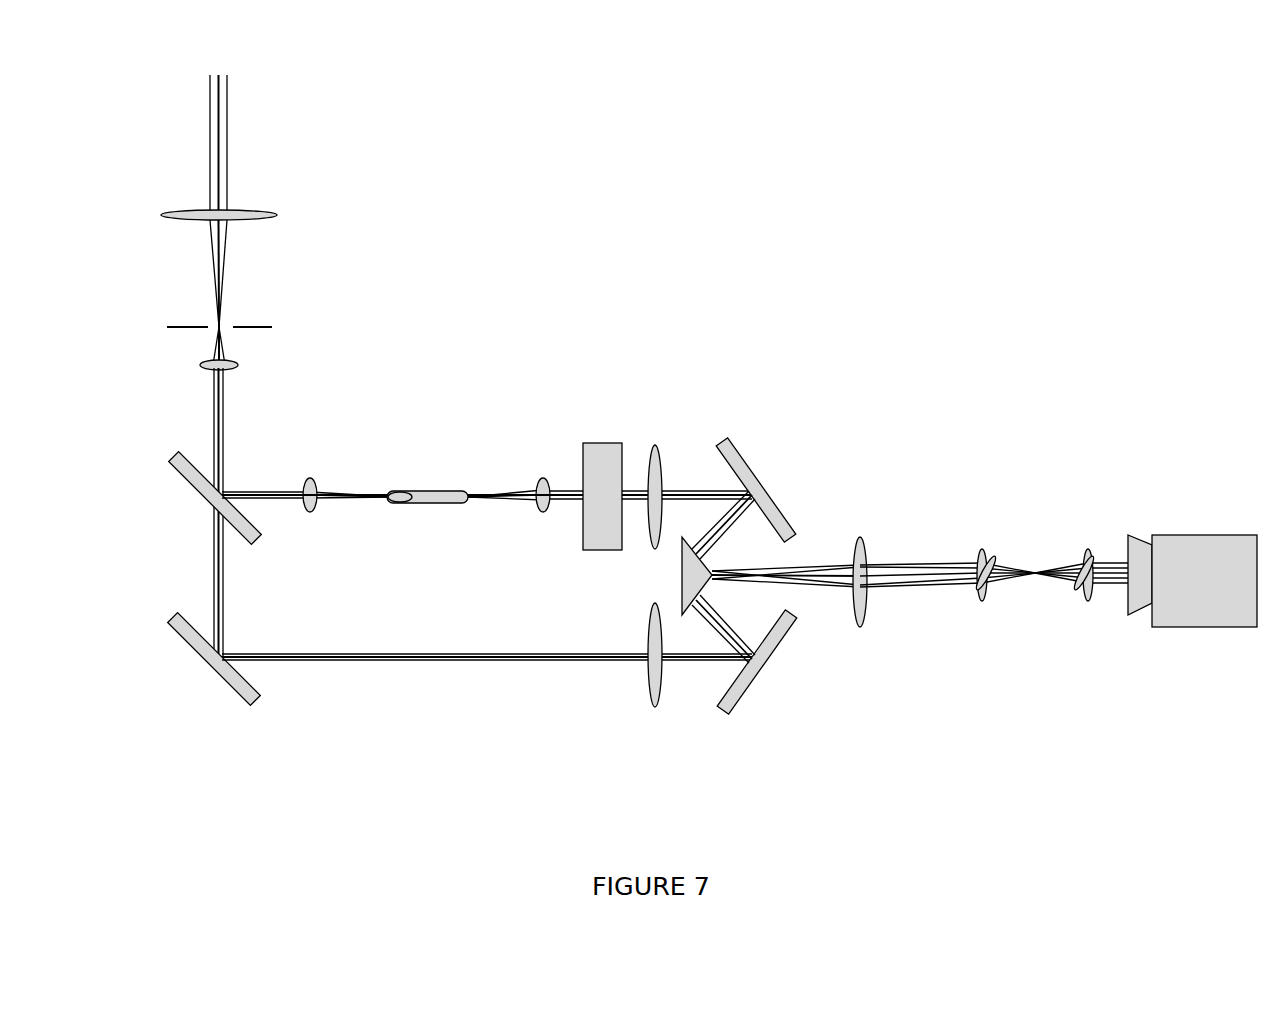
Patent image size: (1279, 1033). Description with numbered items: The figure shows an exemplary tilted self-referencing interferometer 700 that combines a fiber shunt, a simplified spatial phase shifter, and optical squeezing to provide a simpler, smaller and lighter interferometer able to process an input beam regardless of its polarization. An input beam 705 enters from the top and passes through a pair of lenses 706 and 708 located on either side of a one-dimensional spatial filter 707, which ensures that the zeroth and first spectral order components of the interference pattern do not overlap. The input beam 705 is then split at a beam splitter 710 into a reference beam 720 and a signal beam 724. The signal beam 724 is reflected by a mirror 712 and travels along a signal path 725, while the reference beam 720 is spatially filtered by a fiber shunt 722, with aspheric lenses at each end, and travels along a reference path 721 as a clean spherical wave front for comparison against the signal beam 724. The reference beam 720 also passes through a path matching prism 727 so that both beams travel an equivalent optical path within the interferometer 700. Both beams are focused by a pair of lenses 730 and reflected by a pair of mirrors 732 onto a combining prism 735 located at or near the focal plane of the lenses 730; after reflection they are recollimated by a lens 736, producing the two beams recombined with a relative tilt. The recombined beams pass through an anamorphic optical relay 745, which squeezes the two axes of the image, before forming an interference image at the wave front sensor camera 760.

The tilted self-referencing interferometer 700 is at (1016, 101).
The input beam 705 is at (203, 93).
The lens 706 is at (202, 255).
The 1-D spatial filter 707 is at (427, 242).
The lens 708 is at (186, 492).
The beam splitter 710 is at (190, 498).
The mirror 712 is at (183, 659).
The reference beam 720 is at (248, 476).
The reference path 721 is at (487, 528).
The fiber shunt 722 is at (750, 330).
The signal beam 724 is at (274, 641).
The signal path 725 is at (487, 693).
The path matching prism 727 is at (750, 410).
The lenses 730 is at (650, 541).
The mirrors 732 is at (789, 598).
The combining prism 735 is at (623, 740).
The lens 736 is at (873, 559).
The anamorphic optical relay 745 is at (1167, 802).
The wave front sensor camera 760 is at (1192, 581).